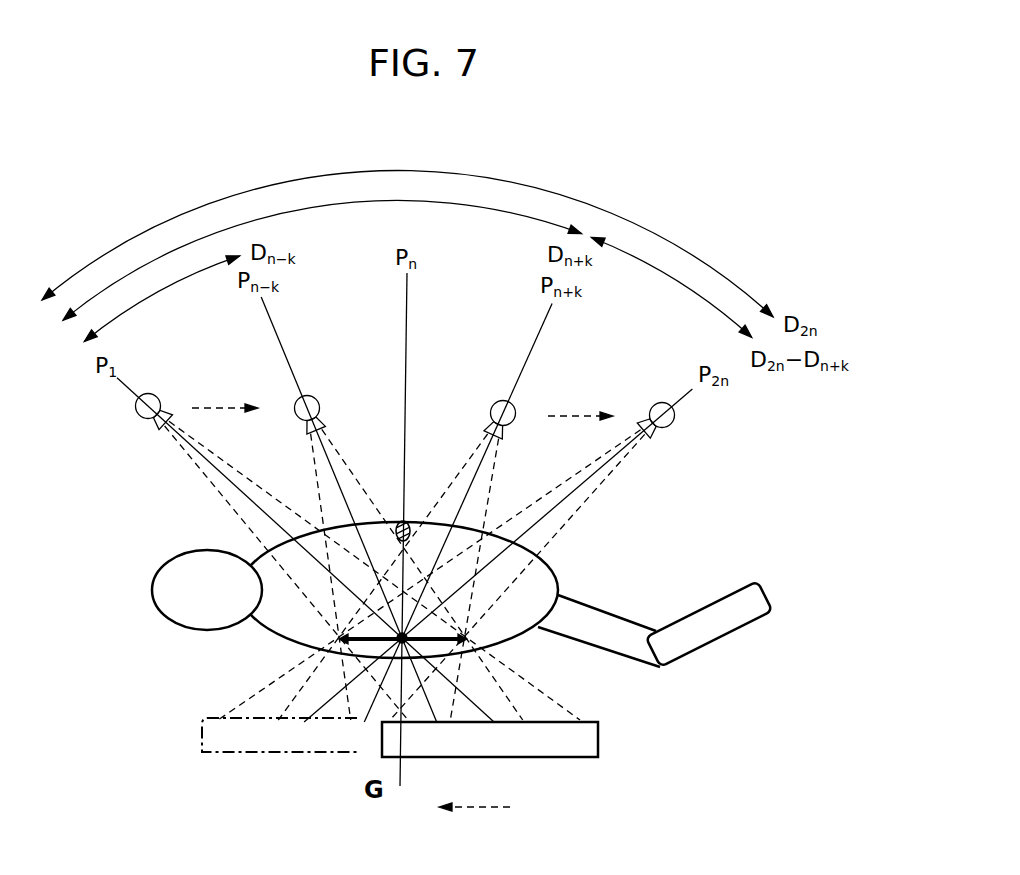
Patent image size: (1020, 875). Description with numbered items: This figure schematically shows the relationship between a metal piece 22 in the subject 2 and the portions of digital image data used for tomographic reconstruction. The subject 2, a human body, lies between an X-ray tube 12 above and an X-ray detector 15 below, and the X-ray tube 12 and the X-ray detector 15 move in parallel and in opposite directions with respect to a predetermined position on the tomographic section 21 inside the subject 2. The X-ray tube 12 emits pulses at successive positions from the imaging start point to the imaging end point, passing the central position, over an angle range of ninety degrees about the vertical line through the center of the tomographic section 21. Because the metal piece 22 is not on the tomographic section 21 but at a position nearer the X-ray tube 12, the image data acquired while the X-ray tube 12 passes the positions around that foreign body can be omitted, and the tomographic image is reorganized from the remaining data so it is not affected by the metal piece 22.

The X-ray tube 12 is at (143, 421).
The metal piece 22 is at (410, 521).
The subject 2 is at (540, 582).
The tomographic section 21 is at (458, 642).
The X-ray detector 15 is at (570, 746).